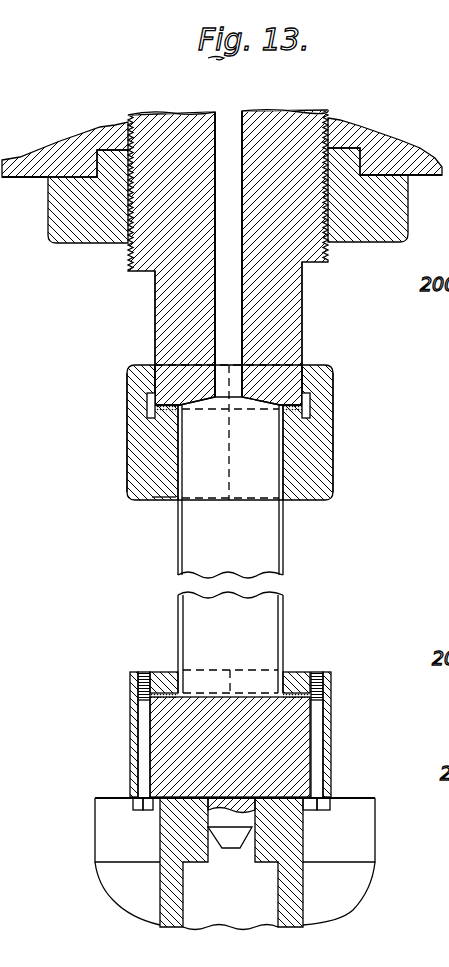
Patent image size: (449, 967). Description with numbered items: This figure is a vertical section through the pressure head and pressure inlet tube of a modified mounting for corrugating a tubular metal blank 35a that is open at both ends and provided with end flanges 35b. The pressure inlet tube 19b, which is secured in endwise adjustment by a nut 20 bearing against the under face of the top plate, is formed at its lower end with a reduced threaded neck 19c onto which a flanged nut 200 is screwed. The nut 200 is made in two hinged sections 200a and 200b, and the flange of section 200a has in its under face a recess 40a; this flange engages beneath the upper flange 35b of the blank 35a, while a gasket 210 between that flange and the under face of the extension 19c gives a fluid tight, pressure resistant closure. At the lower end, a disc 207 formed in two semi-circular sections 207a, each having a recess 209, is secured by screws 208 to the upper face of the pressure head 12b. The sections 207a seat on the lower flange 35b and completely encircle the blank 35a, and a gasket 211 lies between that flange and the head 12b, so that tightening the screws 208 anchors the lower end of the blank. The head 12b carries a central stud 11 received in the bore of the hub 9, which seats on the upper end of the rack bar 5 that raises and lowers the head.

The rack bar 5 is at (200, 915).
The central hub 9 is at (292, 887).
The stud 11 is at (232, 842).
The pressure head 12b is at (160, 745).
The pressure inlet tube 19b is at (158, 120).
The reduced neck 19c is at (168, 323).
The nut 20 is at (72, 232).
The tubular blank 35a is at (285, 545).
The flange 35b is at (281, 674).
The recess 40a is at (175, 500).
The flanged nut 200 is at (337, 436).
The nut section 200a is at (133, 468).
The nut section 200b is at (334, 470).
The disc 207 is at (130, 680).
The disc section 207a is at (313, 654).
The screw 208 is at (144, 775).
The recess 209 is at (170, 688).
The gasket 210 is at (178, 412).
The gasket 211 is at (152, 705).